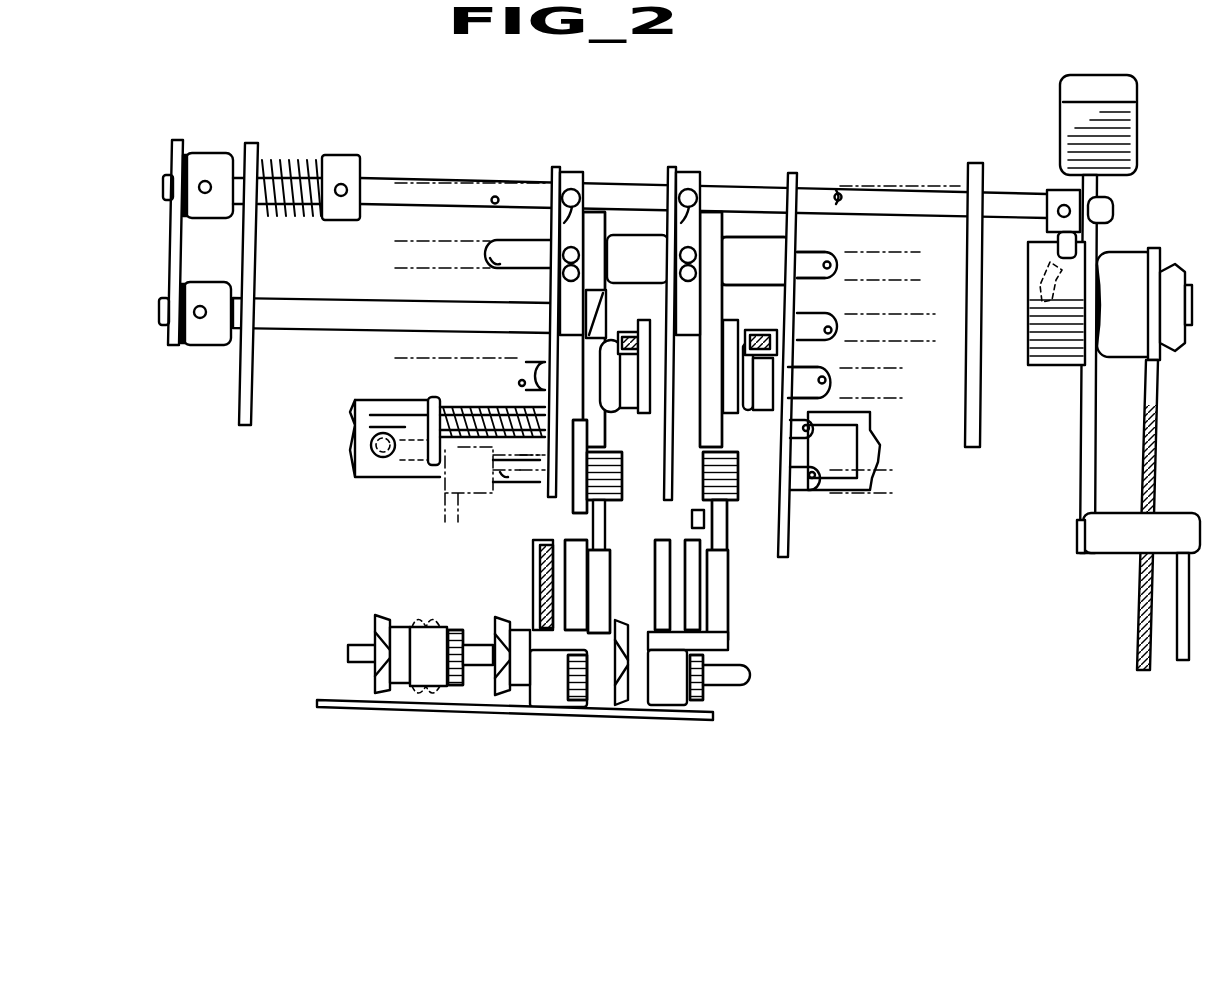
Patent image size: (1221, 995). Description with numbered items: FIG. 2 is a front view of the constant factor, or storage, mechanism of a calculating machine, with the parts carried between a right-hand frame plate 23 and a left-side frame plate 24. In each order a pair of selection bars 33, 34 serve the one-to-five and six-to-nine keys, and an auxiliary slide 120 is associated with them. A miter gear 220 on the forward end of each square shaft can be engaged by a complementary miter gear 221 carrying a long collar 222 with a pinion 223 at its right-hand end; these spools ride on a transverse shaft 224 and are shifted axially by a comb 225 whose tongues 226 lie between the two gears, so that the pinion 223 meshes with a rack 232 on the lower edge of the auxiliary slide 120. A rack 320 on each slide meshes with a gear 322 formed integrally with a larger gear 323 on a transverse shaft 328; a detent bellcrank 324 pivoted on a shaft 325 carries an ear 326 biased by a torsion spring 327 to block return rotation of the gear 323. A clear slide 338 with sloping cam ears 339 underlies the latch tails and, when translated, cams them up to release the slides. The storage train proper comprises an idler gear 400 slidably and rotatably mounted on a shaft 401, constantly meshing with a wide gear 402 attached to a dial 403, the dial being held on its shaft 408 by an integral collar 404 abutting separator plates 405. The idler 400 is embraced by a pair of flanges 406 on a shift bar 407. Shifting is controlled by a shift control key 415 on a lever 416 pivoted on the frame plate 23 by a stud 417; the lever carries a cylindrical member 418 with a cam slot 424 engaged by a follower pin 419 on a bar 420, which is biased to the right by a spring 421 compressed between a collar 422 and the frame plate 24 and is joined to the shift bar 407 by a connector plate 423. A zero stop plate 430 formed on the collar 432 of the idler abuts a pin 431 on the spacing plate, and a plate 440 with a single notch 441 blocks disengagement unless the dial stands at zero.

The right-hand frame plate 23 is at (1145, 485).
The left-side frame plate 24 is at (256, 148).
The selection bar 33 is at (545, 580).
The selection bar 34 is at (553, 545).
The auxiliary slide 120 is at (728, 580).
The miter gear 220 is at (413, 627).
The miter gear 221 is at (378, 628).
The collar 222 is at (655, 680).
The pinion 223 is at (705, 683).
The transverse shaft 224 is at (352, 655).
The comb 225 is at (318, 703).
The tongue 226 is at (545, 710).
The rack 232 is at (722, 641).
The rack 320 is at (728, 530).
The gear 322 is at (730, 476).
The gear 323 is at (692, 520).
The detent bellcrank 324 is at (430, 398).
The shaft 325 is at (805, 432).
The ear 326 is at (434, 460).
The torsion spring 327 is at (510, 406).
The transverse shaft 328 is at (800, 486).
The clear slide 338 is at (862, 424).
The cam ear 339 is at (441, 397).
The idler gear 400 is at (592, 370).
The transverse shaft 401 is at (812, 392).
The wide gear 402 is at (716, 220).
The dial 403 is at (693, 175).
The collar 404 is at (778, 246).
The separator plate 405 is at (792, 176).
The flange 406 is at (598, 300).
The shift bar 407 is at (362, 303).
The transverse shaft 408 is at (828, 265).
The shift control key 415 is at (1137, 110).
The lever 416 is at (1094, 400).
The pivot stud 417 is at (1182, 326).
The cylindrical member 418 is at (1055, 368).
The follower pin 419 is at (1060, 240).
The bar 420 is at (1113, 212).
The spring 421 is at (275, 168).
The collar 422 is at (355, 170).
The connector plate 423 is at (172, 240).
The cam slot 424 is at (1035, 287).
The zero stop plate 430 is at (650, 385).
The pin 431 is at (760, 333).
The collar 432 is at (605, 378).
The plate 440 is at (624, 450).
The notch 441 is at (630, 333).